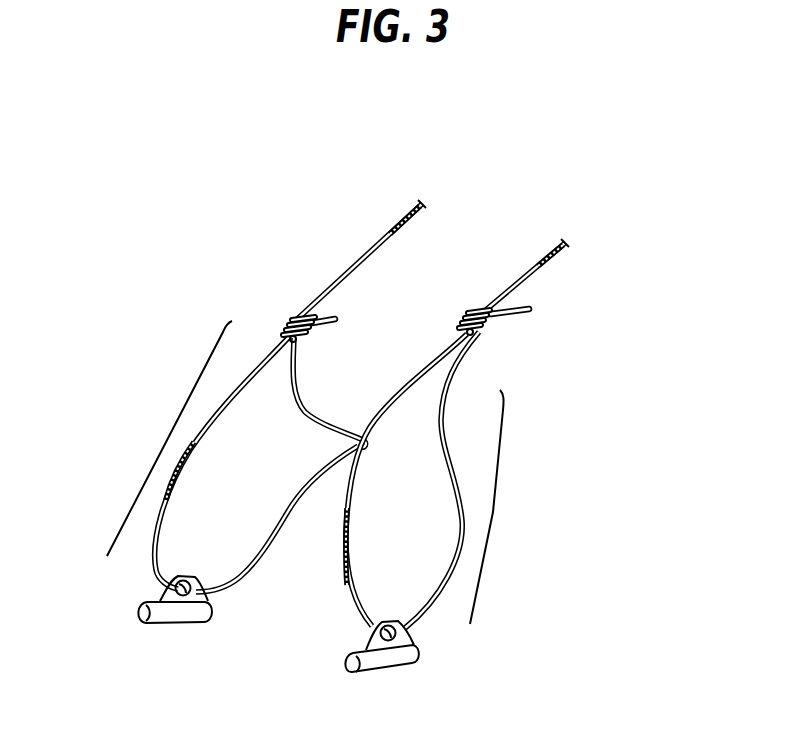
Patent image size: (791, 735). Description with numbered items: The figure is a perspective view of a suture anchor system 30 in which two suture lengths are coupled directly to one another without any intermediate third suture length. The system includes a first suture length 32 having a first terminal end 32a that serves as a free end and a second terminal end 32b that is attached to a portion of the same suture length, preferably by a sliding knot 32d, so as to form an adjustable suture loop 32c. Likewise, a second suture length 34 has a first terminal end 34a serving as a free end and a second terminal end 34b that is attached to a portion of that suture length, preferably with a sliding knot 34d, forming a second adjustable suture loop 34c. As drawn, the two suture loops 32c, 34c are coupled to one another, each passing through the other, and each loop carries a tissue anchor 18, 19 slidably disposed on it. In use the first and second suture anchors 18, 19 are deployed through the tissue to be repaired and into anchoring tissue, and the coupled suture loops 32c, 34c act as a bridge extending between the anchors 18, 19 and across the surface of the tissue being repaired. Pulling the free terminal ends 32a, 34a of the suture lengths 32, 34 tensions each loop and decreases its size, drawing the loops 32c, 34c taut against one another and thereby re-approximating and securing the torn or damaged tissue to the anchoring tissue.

The suture anchor system 30 is at (173, 192).
The first suture length 32 is at (349, 273).
The first terminal end 32a is at (413, 210).
The second terminal end 32b is at (336, 318).
The suture loop 32c is at (165, 439).
The sliding knot 32d is at (288, 323).
The second suture length 34 is at (509, 289).
The first terminal end 34a is at (566, 252).
The second terminal end 34b is at (530, 311).
The suture loop 34c is at (493, 515).
The sliding knot 34d is at (489, 325).
The tissue anchor 18 is at (130, 610).
The tissue anchor 19 is at (336, 656).